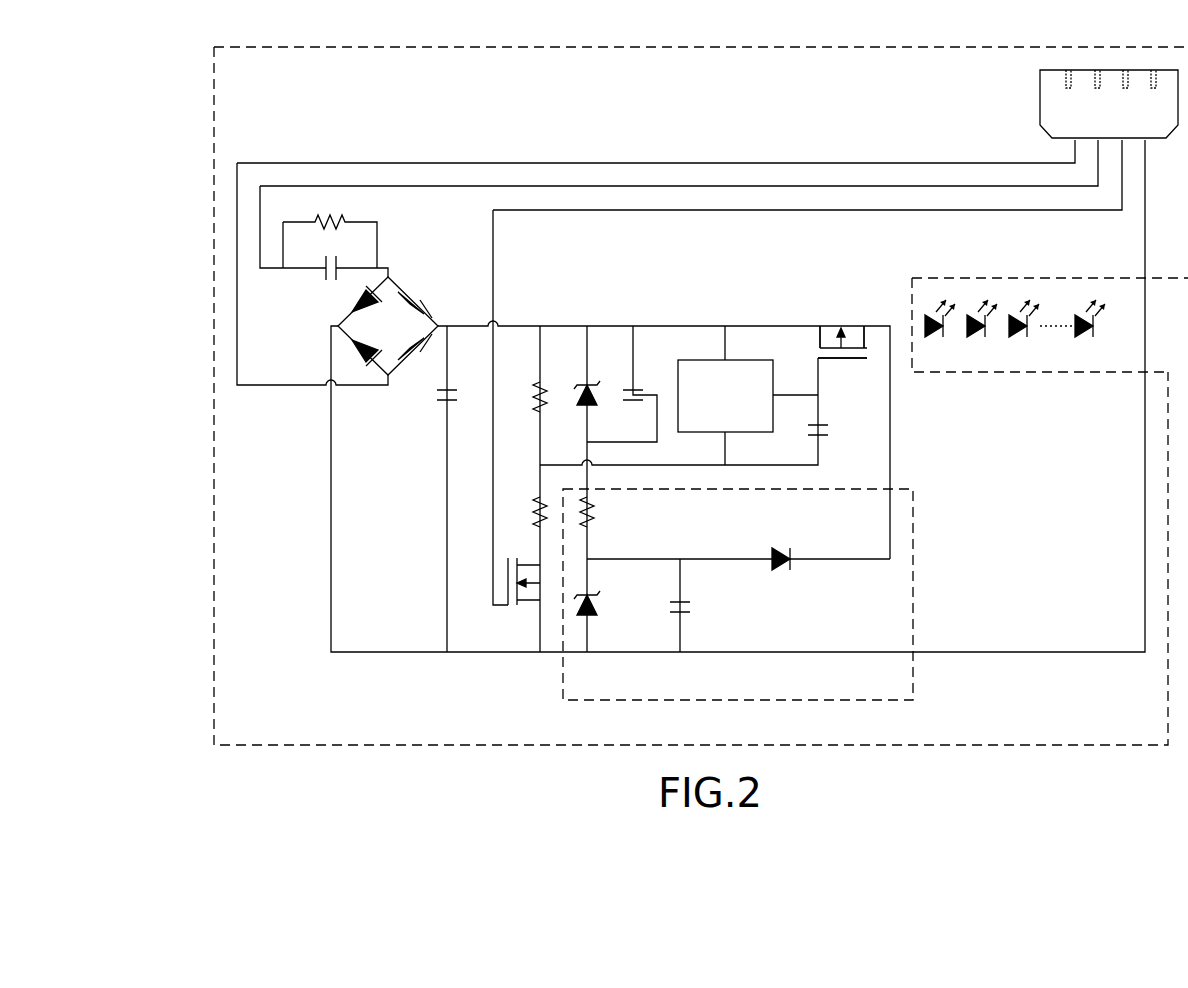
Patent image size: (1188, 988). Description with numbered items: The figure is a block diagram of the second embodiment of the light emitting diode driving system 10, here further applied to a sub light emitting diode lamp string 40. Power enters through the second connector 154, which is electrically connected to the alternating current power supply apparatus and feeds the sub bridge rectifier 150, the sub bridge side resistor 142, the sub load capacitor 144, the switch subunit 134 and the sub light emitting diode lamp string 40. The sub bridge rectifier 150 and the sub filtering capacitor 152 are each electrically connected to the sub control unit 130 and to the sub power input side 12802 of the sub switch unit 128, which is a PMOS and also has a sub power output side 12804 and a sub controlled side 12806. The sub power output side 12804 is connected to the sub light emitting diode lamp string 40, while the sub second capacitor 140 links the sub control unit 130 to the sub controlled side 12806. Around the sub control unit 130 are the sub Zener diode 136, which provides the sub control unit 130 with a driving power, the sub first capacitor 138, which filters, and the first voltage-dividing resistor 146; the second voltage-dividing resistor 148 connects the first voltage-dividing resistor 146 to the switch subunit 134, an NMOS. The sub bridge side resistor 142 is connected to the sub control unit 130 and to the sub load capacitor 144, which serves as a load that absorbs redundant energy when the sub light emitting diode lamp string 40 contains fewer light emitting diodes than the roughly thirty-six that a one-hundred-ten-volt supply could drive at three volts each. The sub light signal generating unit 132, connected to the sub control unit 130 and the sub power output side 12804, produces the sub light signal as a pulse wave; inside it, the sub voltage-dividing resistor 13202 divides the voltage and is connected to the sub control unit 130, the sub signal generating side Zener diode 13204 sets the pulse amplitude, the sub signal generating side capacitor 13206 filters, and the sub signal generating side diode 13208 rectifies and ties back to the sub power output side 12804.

The light emitting diode driving system 10 is at (214, 700).
The sub light emitting diode lamp string 40 is at (1024, 301).
The sub switch unit 128 is at (838, 324).
The sub power input side 12802 is at (818, 326).
The sub power output side 12804 is at (864, 326).
The sub controlled side 12806 is at (822, 367).
The sub control unit 130 is at (759, 362).
The sub light signal generating unit 132 is at (913, 584).
The sub voltage-dividing resistor 13202 is at (598, 514).
The sub signal generating side Zener diode 13204 is at (598, 602).
The sub signal generating side capacitor 13206 is at (692, 608).
The sub signal generating side diode 13208 is at (788, 552).
The switch subunit 134 is at (523, 612).
The sub Zener diode 136 is at (597, 388).
The sub first capacitor 138 is at (646, 394).
The sub second capacitor 140 is at (830, 436).
The sub bridge side resistor 142 is at (345, 218).
The sub load capacitor 144 is at (332, 257).
The first voltage-dividing resistor 146 is at (552, 390).
The second voltage-dividing resistor 148 is at (532, 506).
The sub bridge rectifier 150 is at (429, 292).
The sub filtering capacitor 152 is at (436, 405).
The second connector 154 is at (1040, 94).